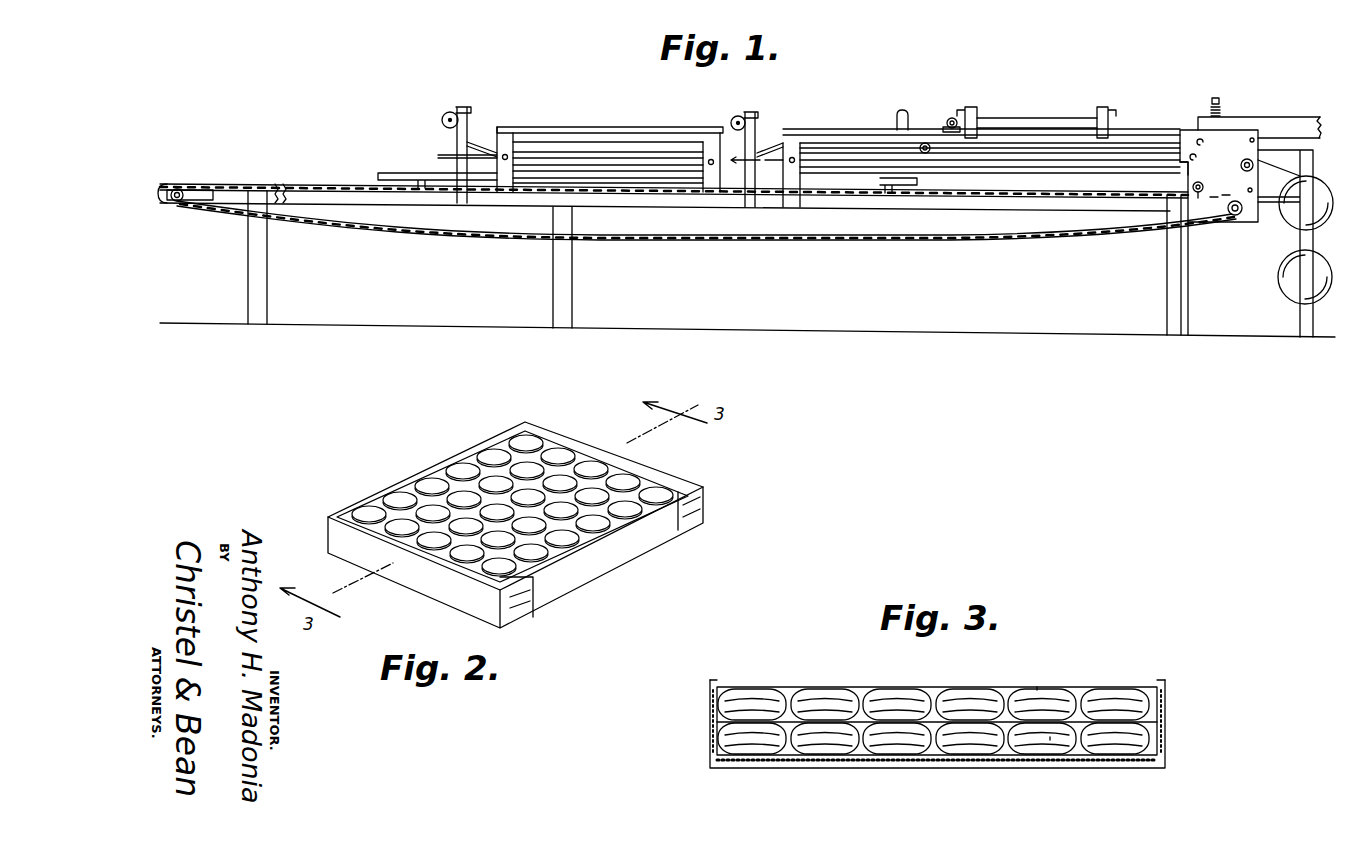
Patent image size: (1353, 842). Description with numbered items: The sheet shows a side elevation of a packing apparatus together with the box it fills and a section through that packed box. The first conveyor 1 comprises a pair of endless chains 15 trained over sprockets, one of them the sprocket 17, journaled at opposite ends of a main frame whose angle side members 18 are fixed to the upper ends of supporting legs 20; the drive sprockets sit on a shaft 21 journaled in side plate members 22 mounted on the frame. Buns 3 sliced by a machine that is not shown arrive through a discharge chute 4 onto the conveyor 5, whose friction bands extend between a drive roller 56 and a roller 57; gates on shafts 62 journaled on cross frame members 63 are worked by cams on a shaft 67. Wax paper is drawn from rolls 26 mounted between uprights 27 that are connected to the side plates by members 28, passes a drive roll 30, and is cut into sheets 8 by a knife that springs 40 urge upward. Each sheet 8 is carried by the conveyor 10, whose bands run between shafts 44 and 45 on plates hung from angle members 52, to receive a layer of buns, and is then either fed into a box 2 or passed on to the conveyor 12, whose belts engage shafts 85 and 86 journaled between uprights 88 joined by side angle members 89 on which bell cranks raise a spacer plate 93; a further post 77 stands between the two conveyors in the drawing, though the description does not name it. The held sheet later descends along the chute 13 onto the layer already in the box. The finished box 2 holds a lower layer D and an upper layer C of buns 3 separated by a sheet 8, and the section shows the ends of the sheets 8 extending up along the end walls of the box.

In FIG. 1, the first conveyor 1 is at (1001, 187).
In FIG. 2, the open top box 2 is at (620, 553).
In FIG. 3, the open top box 2 is at (1167, 708).
In FIG. 2, the hamburger rolls or buns 3 is at (470, 453).
In FIG. 3, the hamburger rolls or buns 3 is at (903, 717).
In FIG. 1, the discharge chute 4 is at (1318, 116).
In FIG. 1, the conveyor 5 is at (1050, 153).
In FIG. 1, the sheet of flexible material 8 is at (1262, 162).
In FIG. 3, the sheet of flexible material 8 is at (720, 683).
In FIG. 1, the conveyor 10 is at (1119, 164).
In FIG. 1, the conveyor 12 is at (571, 146).
In FIG. 1, the chute 13 is at (455, 151).
In FIG. 1, the endless chains 15 is at (1022, 238).
In FIG. 1, the sprocket 17 is at (176, 204).
In FIG. 1, the angle side members 18 is at (950, 207).
In FIG. 1, the supporting legs 20 is at (258, 250).
In FIG. 1, the shaft 21 is at (1233, 217).
In FIG. 1, the side plate members 22 is at (1187, 170).
In FIG. 1, the rolls of sheet material 26 is at (1293, 257).
In FIG. 1, the uprights 27 is at (1305, 312).
In FIG. 1, the members 28 is at (1278, 130).
In FIG. 1, the drive roll 30 is at (1243, 171).
In FIG. 1, the springs 40 is at (1220, 100).
In FIG. 1, the shaft 44 is at (1244, 158).
In FIG. 1, the shaft 45 is at (794, 165).
In FIG. 1, the angle members 52 is at (1150, 129).
In FIG. 1, the drive roller 56 is at (1222, 146).
In FIG. 1, the roller 57 is at (928, 154).
In FIG. 1, the shafts 62 is at (1040, 118).
In FIG. 1, the cross frame members 63 is at (967, 106).
In FIG. 1, the shaft 67 is at (950, 118).
In FIG. 1, the post 77 is at (760, 150).
In FIG. 1, the drive roller shaft 85 is at (712, 165).
In FIG. 1, the drive roller shaft 86 is at (505, 160).
In FIG. 1, the uprights 88 is at (505, 142).
In FIG. 1, the side angle members 89 is at (632, 112).
In FIG. 1, the plate 93 is at (650, 160).
In FIG. 3, the layer of buns C is at (1041, 681).
In FIG. 3, the layer of buns D is at (1055, 733).